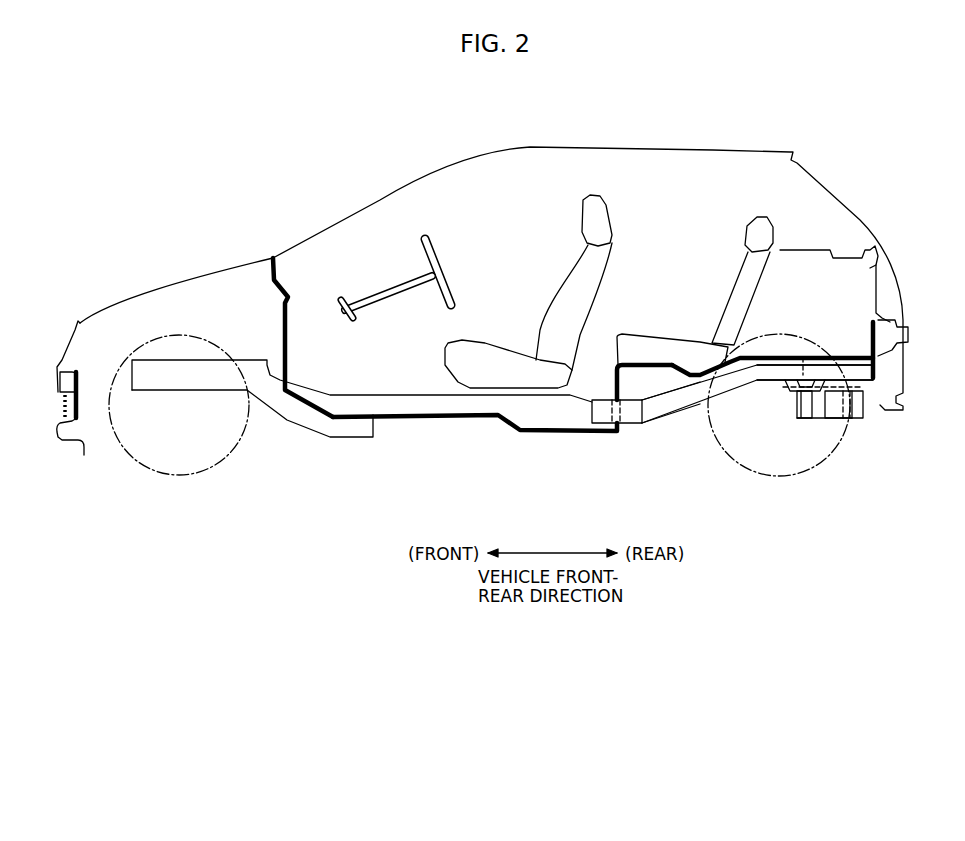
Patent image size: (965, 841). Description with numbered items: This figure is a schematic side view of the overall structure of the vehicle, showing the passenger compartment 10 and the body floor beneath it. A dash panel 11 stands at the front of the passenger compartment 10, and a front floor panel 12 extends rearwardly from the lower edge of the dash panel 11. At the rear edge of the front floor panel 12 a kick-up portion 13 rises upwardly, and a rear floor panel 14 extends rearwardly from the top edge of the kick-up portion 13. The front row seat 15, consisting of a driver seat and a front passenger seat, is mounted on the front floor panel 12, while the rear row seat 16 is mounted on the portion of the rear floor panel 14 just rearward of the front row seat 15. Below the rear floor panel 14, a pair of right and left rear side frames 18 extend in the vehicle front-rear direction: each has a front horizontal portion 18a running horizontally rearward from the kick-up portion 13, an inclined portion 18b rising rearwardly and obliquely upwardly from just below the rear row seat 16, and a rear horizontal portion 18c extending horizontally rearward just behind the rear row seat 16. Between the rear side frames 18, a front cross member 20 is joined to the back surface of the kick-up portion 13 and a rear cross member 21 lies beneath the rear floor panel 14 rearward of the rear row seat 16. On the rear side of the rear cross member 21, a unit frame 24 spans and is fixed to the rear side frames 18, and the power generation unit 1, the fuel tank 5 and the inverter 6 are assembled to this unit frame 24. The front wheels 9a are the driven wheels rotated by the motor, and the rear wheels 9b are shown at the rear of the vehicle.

The power generation unit 1 is at (793, 415).
The fuel tank 5 is at (815, 417).
The inverter 6 is at (855, 418).
The front wheels 9a is at (165, 476).
The rear wheel 9b is at (800, 477).
The passenger compartment 10 is at (506, 229).
The dash panel 11 is at (293, 343).
The front floor panel 12 is at (422, 418).
The kick-up portion 13 is at (614, 388).
The rear floor panel 14 is at (706, 362).
The front row seat 15 is at (597, 215).
The rear row seat 16 is at (752, 228).
The rear side frames 18 is at (687, 400).
The front horizontal portion 18a is at (642, 427).
The inclined portion 18b is at (722, 380).
The rear horizontal portion 18c is at (868, 356).
The front cross member 20 is at (637, 424).
The rear cross member 21 is at (803, 357).
The unit frame 24 is at (793, 388).